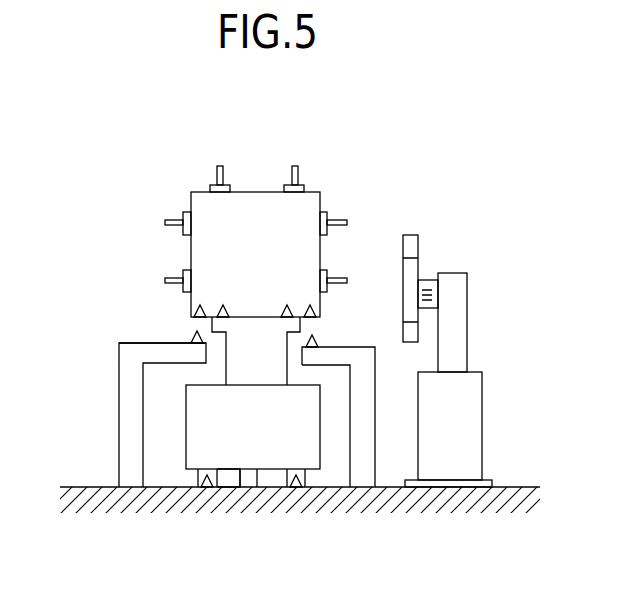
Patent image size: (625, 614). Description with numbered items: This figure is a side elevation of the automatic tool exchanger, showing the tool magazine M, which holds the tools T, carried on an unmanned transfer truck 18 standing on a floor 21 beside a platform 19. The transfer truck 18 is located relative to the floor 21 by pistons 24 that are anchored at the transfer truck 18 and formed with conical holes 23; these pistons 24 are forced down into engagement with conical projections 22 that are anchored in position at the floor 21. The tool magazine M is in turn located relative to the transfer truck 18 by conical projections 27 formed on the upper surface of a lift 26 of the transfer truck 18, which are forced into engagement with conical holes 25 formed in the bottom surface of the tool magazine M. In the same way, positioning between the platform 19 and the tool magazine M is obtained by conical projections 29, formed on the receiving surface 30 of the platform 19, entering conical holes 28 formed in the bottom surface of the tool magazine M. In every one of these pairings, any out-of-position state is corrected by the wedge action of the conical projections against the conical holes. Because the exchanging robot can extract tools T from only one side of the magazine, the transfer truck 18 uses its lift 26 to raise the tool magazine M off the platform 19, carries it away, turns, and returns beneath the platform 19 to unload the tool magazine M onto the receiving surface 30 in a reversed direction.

The tool magazine M is at (308, 203).
The tools T is at (176, 218).
The unmanned transfer truck 18 is at (207, 433).
The platform 19 is at (130, 350).
The floor 21 is at (510, 487).
The conical projections 22 is at (209, 481).
The conical holes 23 is at (217, 481).
The pistons 24 is at (200, 475).
The conical holes 25 is at (298, 332).
The lift 26 is at (233, 365).
The conical projections 27 is at (297, 332).
The conical holes 28 is at (198, 307).
The conical projections 29 is at (193, 338).
The receiving surface 30 is at (150, 343).